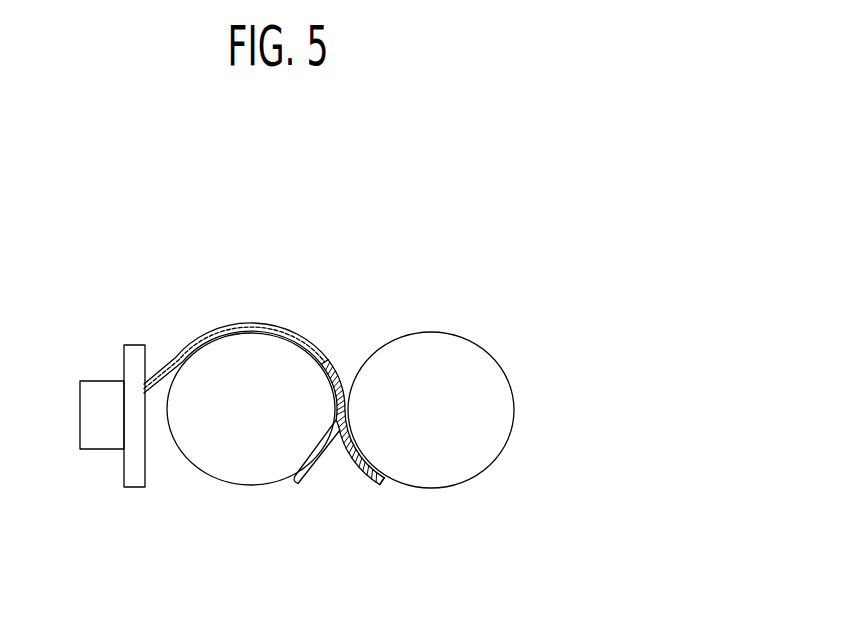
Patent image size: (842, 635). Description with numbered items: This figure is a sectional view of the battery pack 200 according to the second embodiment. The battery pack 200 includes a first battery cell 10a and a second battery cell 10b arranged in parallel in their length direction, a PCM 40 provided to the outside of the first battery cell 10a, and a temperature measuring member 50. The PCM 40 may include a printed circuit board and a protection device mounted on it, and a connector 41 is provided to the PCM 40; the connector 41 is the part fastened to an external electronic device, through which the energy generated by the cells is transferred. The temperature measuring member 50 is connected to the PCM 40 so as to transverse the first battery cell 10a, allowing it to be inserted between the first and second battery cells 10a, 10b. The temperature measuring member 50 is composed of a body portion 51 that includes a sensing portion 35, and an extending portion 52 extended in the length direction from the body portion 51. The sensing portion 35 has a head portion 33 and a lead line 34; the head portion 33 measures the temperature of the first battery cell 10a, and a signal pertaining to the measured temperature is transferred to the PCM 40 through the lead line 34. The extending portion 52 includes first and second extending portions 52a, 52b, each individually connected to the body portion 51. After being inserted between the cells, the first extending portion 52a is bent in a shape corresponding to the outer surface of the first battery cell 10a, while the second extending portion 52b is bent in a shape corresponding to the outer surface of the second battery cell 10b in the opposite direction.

The battery pack 200 is at (518, 243).
The first battery cell 10a is at (244, 468).
The second battery cell 10b is at (438, 473).
The PCM 40 is at (134, 345).
The connector 41 is at (96, 381).
The sensing portion 35 is at (236, 300).
The lead line 34 is at (262, 327).
The head portion 33 is at (325, 360).
The body portion 51 is at (299, 333).
The temperature measuring member 50 is at (372, 275).
The extending portion 52 is at (339, 516).
The first extending portion 52a is at (315, 481).
The second extending portion 52b is at (372, 525).